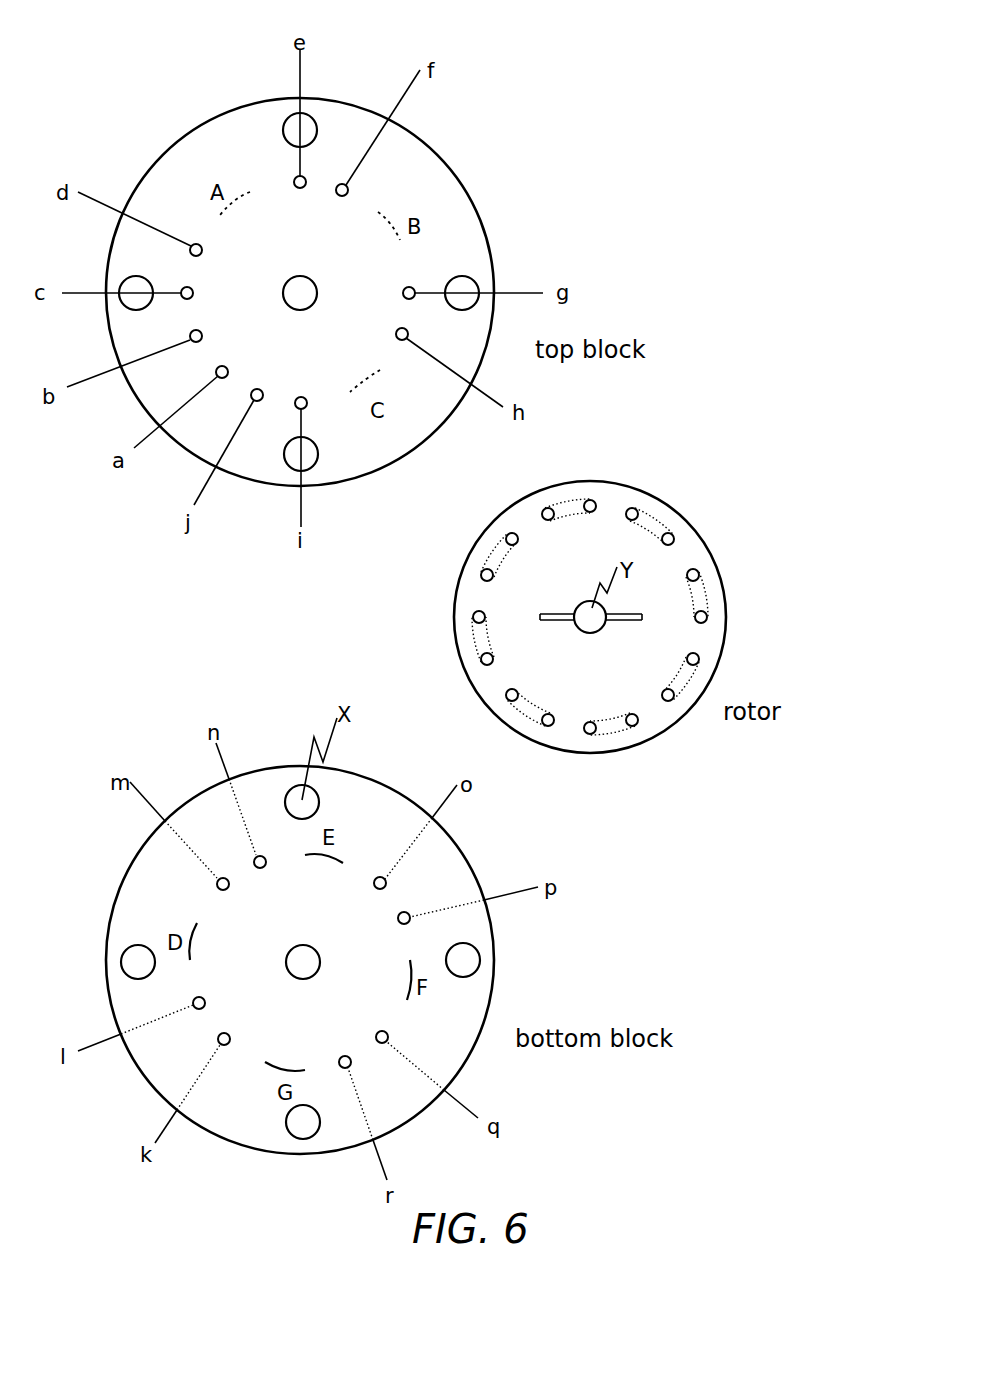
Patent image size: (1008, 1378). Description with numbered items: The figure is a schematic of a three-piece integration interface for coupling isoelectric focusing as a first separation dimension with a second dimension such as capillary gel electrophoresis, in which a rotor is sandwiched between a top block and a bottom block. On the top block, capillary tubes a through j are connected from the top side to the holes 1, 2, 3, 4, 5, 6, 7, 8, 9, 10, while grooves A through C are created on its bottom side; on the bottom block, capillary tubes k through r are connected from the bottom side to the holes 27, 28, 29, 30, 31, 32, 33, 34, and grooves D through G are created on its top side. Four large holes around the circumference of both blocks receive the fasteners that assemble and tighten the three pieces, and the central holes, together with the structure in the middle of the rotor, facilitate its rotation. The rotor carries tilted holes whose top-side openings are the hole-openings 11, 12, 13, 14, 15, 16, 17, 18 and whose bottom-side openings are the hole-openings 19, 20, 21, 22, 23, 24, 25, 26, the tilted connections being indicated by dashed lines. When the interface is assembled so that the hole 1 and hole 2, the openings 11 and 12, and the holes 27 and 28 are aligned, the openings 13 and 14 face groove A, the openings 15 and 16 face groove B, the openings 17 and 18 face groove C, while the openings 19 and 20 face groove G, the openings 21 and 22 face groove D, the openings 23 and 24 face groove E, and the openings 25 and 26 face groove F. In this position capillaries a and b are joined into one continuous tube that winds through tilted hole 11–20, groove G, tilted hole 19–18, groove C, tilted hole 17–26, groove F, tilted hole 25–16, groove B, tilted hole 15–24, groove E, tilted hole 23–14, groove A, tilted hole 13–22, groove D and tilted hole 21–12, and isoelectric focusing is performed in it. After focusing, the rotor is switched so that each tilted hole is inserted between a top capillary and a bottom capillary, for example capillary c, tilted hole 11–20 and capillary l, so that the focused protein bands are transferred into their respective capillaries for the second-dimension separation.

The hole 1 is at (230, 363).
The hole 2 is at (207, 336).
The hole 3 is at (198, 294).
The hole 4 is at (205, 252).
The hole 5 is at (300, 200).
The hole 6 is at (336, 204).
The hole 7 is at (395, 293).
The hole 8 is at (389, 331).
The hole 9 is at (300, 388).
The hole 10 is at (265, 380).
The hole-opening 11 is at (522, 685).
The hole-opening 12 is at (503, 654).
The hole-opening 13 is at (524, 551).
The hole-opening 14 is at (552, 529).
The hole-opening 15 is at (657, 548).
The hole-opening 16 is at (677, 574).
The hole-opening 17 is at (660, 683).
The hole-opening 18 is at (630, 704).
The hole-opening 19 is at (585, 715).
The hole-opening 20 is at (555, 708).
The hole-opening 21 is at (494, 617).
The hole-opening 22 is at (503, 583).
The hole-opening 23 is at (589, 522).
The hole-opening 24 is at (624, 529).
The hole-opening 25 is at (686, 617).
The hole-opening 26 is at (681, 649).
The hole 27 is at (239, 1036).
The hole 28 is at (215, 1001).
The hole 29 is at (232, 898).
The hole 30 is at (269, 875).
The hole 31 is at (364, 885).
The hole 32 is at (390, 920).
The hole 33 is at (368, 1026).
The hole 34 is at (328, 1052).